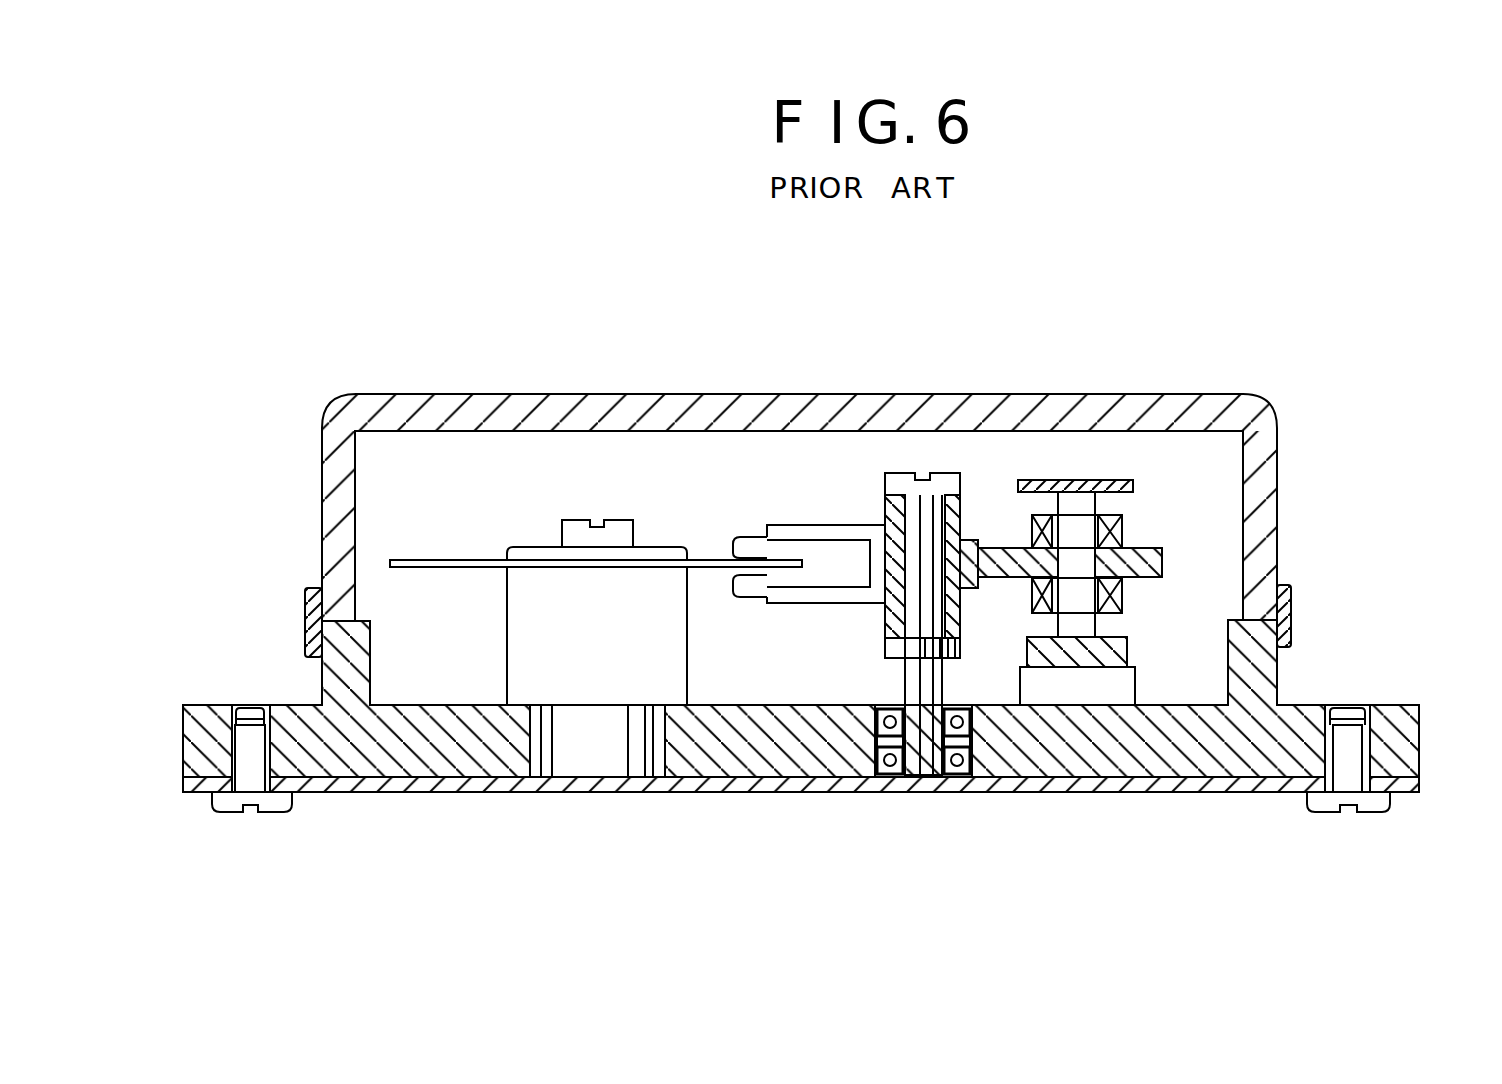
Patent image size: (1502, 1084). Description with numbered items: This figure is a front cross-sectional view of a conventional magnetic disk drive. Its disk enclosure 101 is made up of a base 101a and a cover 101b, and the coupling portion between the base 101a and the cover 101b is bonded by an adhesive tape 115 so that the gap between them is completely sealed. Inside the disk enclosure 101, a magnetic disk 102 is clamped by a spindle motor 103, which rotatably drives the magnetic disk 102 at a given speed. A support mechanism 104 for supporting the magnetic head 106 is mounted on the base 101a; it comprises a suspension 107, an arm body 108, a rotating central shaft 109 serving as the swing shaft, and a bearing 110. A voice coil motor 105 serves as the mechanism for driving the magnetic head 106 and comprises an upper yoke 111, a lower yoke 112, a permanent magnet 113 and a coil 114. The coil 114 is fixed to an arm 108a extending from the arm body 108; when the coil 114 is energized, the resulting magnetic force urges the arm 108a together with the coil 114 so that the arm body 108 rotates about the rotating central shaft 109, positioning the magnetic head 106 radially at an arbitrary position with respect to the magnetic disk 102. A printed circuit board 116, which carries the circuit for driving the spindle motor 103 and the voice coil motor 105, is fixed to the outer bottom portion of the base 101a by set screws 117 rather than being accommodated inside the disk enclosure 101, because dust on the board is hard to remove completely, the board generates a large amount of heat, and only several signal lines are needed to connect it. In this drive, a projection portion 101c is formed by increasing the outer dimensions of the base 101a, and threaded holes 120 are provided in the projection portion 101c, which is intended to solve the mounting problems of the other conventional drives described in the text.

The disk enclosure 101 is at (346, 398).
The base 101a is at (398, 760).
The cover 101b is at (322, 462).
The projection portion 101c is at (200, 705).
The magnetic disk 102 is at (450, 560).
The spindle motor 103 is at (700, 688).
The support mechanism 104 is at (885, 502).
The voice coil motor 105 is at (1130, 514).
The magnetic head 106 is at (735, 548).
The suspension 107 is at (800, 527).
The arm body 108 is at (970, 540).
The arm 108a is at (1162, 560).
The rotating central shaft 109 is at (920, 775).
The bearing 110 is at (957, 775).
The upper yoke 111 is at (1080, 480).
The lower yoke 112 is at (1137, 684).
The permanent magnet 113 is at (1095, 625).
The coil 114 is at (1130, 533).
The adhesive tape 115 is at (305, 605).
The printed circuit board 116 is at (1043, 792).
The set screws 117 is at (222, 812).
The threaded holes 120 is at (248, 718).